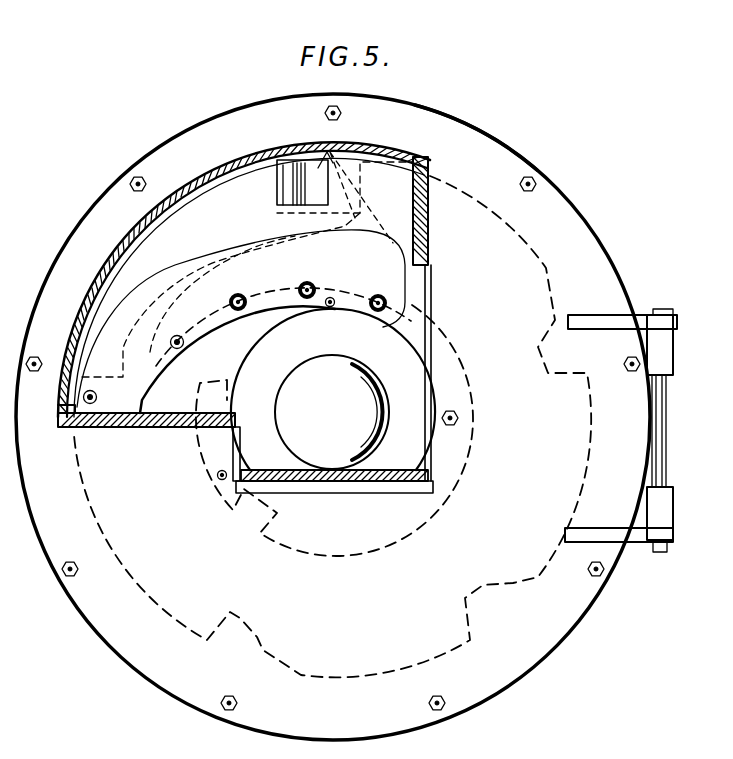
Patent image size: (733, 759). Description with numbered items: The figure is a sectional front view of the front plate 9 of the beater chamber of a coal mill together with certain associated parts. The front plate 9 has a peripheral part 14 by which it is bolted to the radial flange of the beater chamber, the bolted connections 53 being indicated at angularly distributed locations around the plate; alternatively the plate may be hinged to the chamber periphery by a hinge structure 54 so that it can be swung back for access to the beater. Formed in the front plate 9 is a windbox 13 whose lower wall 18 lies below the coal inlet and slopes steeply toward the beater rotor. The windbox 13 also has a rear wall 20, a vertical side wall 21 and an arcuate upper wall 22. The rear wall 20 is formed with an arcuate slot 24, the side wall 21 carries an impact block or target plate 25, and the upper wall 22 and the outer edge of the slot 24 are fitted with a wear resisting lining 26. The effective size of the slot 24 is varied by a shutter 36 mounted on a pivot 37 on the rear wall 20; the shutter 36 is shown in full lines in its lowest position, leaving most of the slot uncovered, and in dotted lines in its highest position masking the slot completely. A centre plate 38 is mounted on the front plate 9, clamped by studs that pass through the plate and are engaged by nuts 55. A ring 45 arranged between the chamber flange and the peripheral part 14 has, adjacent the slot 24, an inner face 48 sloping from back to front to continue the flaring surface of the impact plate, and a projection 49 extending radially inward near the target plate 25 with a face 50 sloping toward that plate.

The front plate 9 is at (458, 663).
The windbox 13 is at (408, 344).
The peripheral part 14 is at (482, 150).
The lower wall 18 is at (400, 481).
The rear wall 20 is at (152, 412).
The vertical side wall 21 is at (421, 319).
The arcuate upper wall 22 is at (205, 197).
The arcuate slot 24 is at (187, 181).
The impact block or target plate 25 is at (429, 201).
The wear resisting lining 26 is at (167, 196).
The shutter 36 is at (386, 270).
The pivot 37 is at (80, 412).
The centre plate 38 is at (347, 430).
The ring 45 is at (352, 676).
The inner face 48 is at (149, 244).
The projection 49 is at (322, 153).
The face 50 is at (279, 189).
The bolted connections 53 is at (537, 187).
The hinge structure 54 is at (667, 420).
The nuts 55 is at (348, 272).